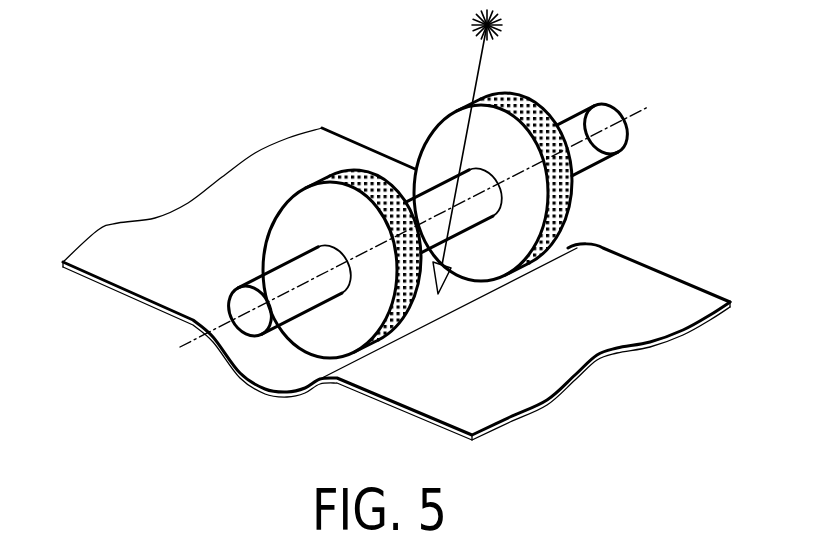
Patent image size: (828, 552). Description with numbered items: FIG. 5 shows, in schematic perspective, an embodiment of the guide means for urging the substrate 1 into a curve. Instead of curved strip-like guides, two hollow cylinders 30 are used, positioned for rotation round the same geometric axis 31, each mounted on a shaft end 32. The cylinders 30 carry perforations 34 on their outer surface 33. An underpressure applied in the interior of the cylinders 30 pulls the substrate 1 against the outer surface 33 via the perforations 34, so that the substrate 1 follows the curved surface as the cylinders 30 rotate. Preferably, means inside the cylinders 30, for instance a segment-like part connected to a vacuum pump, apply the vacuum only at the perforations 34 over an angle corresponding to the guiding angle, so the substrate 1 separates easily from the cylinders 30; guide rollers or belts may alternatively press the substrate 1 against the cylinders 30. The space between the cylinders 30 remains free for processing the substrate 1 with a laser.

The substrate 1 is at (112, 248).
The hollow cylinder 30 is at (457, 202).
The geometric axis 31 is at (182, 342).
The shaft end 32 is at (257, 266).
The outer surface 33 is at (417, 308).
The perforation 34 is at (568, 205).